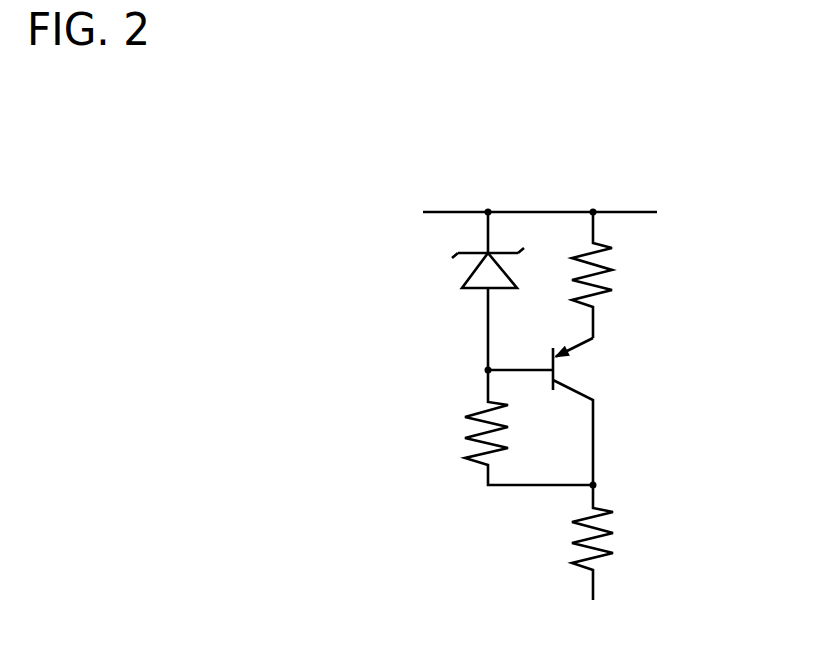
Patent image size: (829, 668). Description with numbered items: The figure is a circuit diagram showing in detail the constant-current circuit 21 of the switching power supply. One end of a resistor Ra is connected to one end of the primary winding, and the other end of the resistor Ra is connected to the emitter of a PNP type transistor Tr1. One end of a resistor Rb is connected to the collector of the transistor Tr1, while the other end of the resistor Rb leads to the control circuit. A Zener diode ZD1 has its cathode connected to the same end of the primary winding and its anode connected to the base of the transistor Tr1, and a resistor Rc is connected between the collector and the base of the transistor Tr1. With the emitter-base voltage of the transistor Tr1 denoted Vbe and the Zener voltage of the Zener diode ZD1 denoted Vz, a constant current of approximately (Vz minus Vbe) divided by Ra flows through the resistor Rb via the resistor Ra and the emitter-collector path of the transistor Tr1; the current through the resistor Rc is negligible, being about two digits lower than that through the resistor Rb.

The constant-current circuit 21 is at (543, 191).
The Zener diode ZD1 is at (452, 273).
The resistor Ra is at (630, 275).
The resistor Rb is at (623, 543).
The resistor Rc is at (452, 430).
The PNP type transistor Tr1 is at (588, 370).